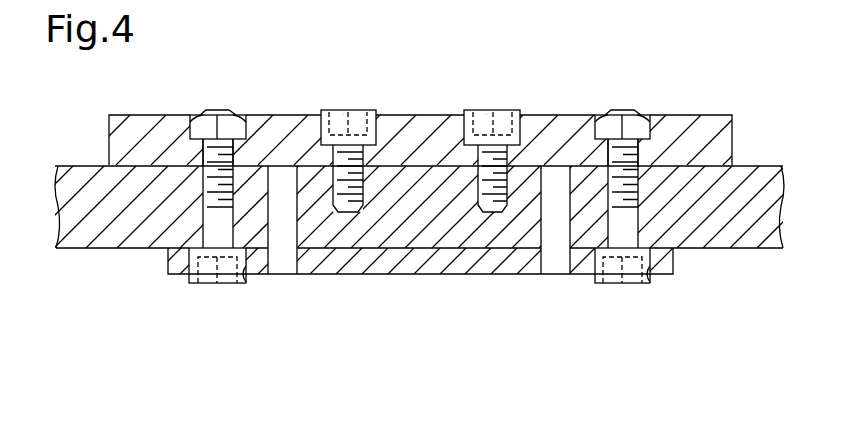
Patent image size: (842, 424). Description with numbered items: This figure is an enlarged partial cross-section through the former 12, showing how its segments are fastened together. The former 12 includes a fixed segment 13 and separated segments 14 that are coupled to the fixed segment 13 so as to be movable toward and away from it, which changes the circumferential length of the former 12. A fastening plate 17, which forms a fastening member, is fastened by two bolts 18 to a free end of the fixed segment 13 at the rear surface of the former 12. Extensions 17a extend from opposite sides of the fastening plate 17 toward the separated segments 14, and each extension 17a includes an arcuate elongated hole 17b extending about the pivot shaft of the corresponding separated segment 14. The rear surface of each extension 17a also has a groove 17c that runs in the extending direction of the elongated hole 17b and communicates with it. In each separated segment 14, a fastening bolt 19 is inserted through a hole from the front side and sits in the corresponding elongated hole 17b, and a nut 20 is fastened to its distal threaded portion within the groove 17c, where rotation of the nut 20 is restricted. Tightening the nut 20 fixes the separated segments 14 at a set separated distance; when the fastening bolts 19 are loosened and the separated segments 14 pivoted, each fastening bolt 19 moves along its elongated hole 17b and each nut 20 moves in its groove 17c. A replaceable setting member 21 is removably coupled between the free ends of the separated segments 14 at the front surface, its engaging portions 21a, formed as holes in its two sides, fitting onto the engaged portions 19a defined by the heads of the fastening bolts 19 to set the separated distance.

The former 12 is at (92, 143).
The fixed segment 13 is at (442, 232).
The separated segment 14 is at (107, 232).
The fastening plate 17 is at (409, 118).
The extension 17a is at (136, 123).
The arcuate elongated hole 17b is at (212, 148).
The groove 17c is at (241, 121).
The bolt 18 is at (323, 110).
The fastening bolt 19 is at (196, 284).
The engaged portion 19a is at (211, 284).
The nut 20 is at (218, 116).
The setting member 21 is at (349, 274).
The engaging portion 21a is at (243, 284).